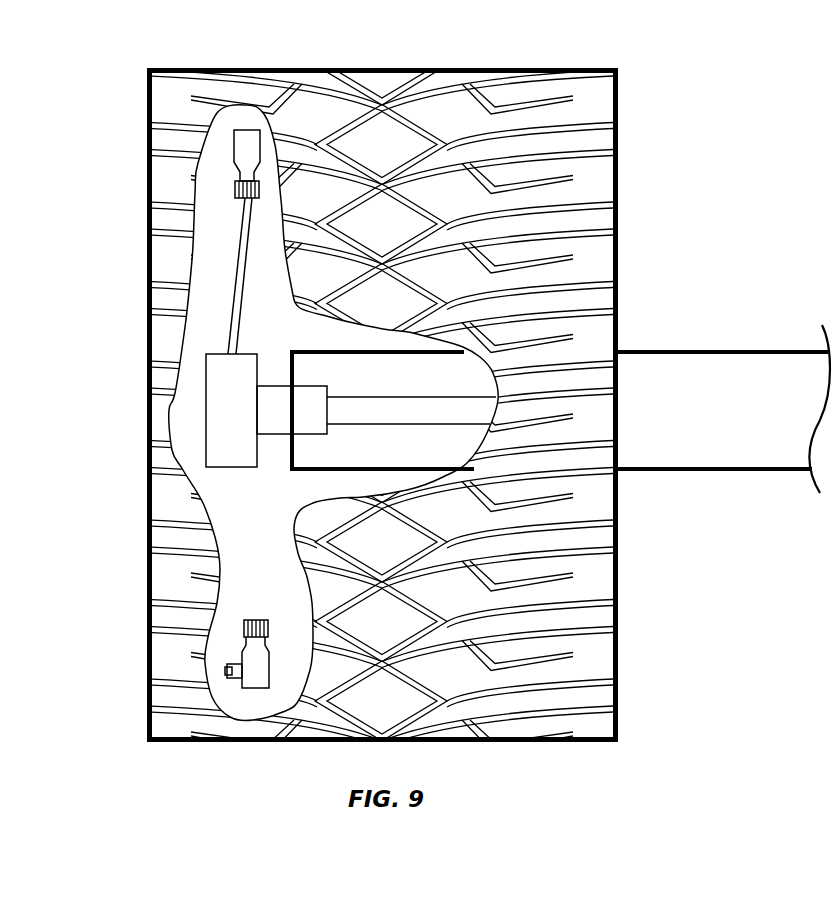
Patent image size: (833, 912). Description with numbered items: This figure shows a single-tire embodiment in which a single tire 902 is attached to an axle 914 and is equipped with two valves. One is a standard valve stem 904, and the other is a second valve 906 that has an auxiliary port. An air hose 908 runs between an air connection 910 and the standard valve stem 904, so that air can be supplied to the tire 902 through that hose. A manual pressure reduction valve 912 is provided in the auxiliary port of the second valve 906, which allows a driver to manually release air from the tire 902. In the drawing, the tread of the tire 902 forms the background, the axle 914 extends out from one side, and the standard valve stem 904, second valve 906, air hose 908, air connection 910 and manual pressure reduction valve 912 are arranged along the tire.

The single-tire 902 is at (302, 70).
The standard valve stem 904 is at (247, 130).
The second valve 906 is at (259, 690).
The air hose 908 is at (232, 261).
The air connection 910 is at (207, 411).
The manual pressure reduction valve 912 is at (228, 676).
The axle 914 is at (708, 351).